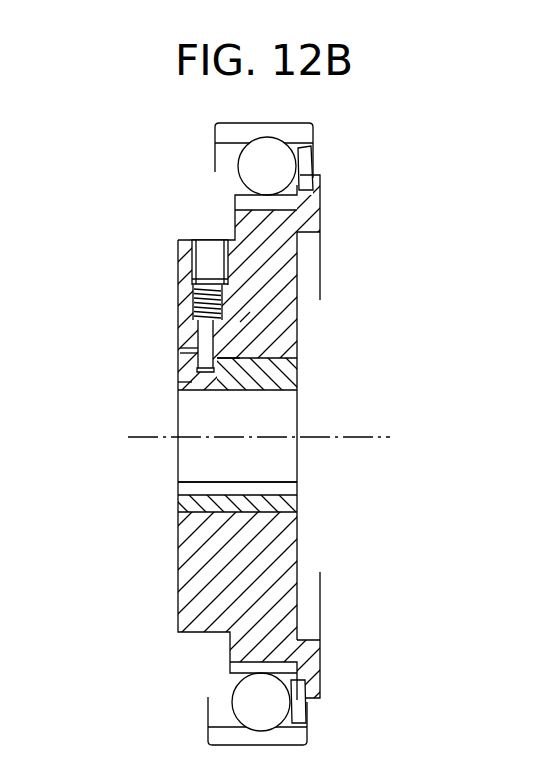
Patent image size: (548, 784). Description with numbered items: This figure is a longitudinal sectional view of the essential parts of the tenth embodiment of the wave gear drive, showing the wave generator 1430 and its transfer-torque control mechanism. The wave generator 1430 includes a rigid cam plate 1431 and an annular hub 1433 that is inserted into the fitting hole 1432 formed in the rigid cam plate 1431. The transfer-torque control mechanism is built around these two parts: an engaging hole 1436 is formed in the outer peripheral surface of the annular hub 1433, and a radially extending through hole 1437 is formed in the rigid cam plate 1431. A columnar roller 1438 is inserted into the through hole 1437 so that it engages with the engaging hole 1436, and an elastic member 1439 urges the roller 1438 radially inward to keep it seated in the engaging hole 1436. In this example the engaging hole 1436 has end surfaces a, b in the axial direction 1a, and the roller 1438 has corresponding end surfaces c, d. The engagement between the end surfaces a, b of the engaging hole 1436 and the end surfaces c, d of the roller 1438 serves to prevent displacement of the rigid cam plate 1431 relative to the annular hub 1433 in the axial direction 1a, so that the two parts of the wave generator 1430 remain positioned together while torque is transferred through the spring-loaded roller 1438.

The wave generator 1430 is at (345, 247).
The rigid cam plate 1431 is at (277, 320).
The fitting hole 1432 is at (285, 390).
The annular hub 1433 is at (225, 365).
The engaging hole 1436 is at (190, 352).
The through hole 1437 is at (207, 256).
The roller 1438 is at (210, 322).
The elastic member 1439 is at (207, 298).
The end surface a is at (180, 382).
The end surface b is at (193, 345).
The end surface c is at (205, 347).
The end surface d is at (238, 325).
The axial direction 1a is at (200, 437).